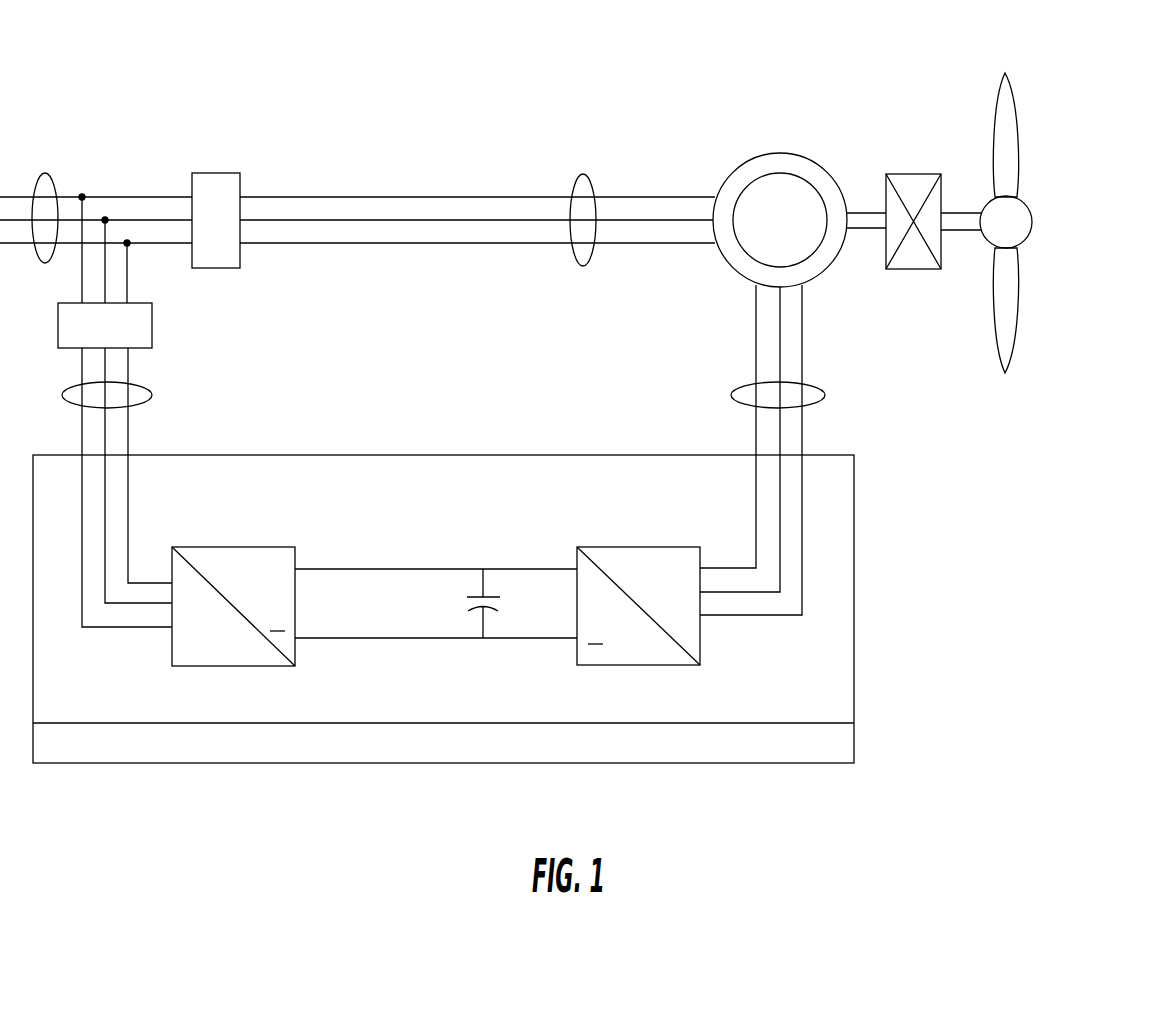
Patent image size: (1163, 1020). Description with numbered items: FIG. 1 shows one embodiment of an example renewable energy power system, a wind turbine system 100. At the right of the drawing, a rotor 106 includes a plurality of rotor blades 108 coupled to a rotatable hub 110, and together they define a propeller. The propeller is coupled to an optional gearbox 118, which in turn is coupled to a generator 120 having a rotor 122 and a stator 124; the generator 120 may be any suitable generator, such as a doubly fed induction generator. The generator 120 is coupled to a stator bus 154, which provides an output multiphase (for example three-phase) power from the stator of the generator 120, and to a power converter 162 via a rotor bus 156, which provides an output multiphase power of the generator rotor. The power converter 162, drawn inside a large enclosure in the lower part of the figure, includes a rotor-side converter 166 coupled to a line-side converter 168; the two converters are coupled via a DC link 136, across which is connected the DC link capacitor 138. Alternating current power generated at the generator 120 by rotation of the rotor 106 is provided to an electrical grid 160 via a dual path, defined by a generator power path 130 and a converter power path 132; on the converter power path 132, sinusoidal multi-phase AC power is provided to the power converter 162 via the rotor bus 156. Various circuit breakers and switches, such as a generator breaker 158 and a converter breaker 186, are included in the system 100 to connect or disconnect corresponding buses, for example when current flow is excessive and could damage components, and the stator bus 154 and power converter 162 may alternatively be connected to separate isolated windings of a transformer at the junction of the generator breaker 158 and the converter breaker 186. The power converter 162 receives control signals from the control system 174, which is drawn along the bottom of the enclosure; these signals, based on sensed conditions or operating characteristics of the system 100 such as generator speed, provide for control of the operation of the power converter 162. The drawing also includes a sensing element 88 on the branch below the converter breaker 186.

The system 100 is at (383, 135).
The rotor 106 is at (1067, 219).
The rotor blades 108 is at (1019, 148).
The rotatable hub 110 is at (1032, 218).
The gearbox 118 is at (913, 174).
The generator 120 is at (799, 185).
The rotor 122 is at (814, 186).
The stator 124 is at (740, 164).
The generator power path 130 is at (667, 194).
The converter power path 132 is at (807, 310).
The DC link 136 is at (492, 567).
The DC link capacitor 138 is at (475, 594).
The stator bus 154 is at (583, 174).
The rotor bus 156 is at (825, 395).
The generator breaker 158 is at (213, 173).
The electrical grid 160 is at (45, 173).
The power converter 162 is at (854, 535).
The rotor-side converter 166 is at (700, 640).
The line-side converter 168 is at (172, 652).
The control system 174 is at (854, 733).
The converter breaker 186 is at (58, 325).
The auxiliary sensor 88 is at (63, 395).